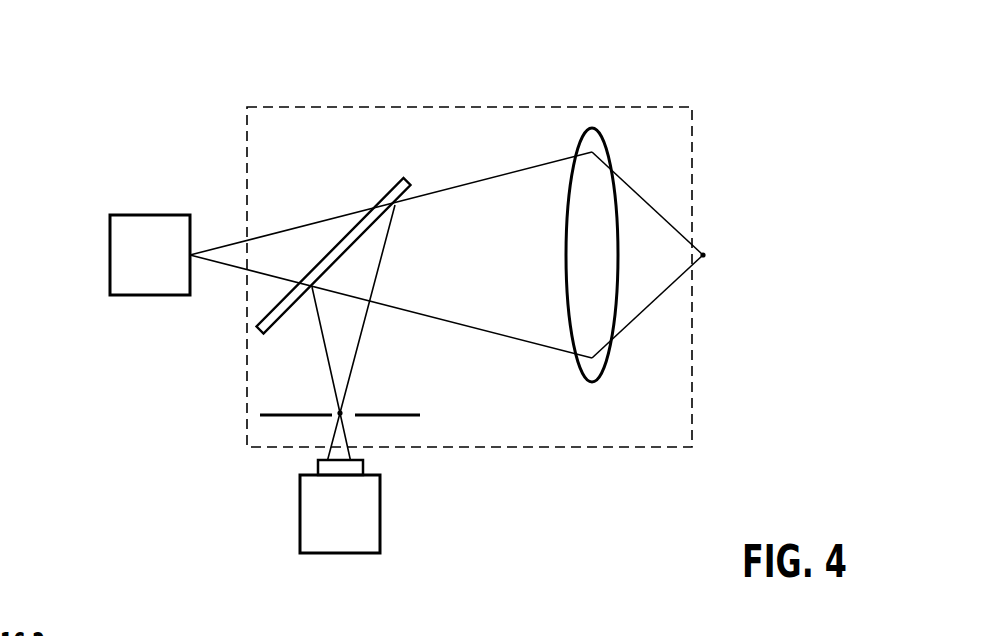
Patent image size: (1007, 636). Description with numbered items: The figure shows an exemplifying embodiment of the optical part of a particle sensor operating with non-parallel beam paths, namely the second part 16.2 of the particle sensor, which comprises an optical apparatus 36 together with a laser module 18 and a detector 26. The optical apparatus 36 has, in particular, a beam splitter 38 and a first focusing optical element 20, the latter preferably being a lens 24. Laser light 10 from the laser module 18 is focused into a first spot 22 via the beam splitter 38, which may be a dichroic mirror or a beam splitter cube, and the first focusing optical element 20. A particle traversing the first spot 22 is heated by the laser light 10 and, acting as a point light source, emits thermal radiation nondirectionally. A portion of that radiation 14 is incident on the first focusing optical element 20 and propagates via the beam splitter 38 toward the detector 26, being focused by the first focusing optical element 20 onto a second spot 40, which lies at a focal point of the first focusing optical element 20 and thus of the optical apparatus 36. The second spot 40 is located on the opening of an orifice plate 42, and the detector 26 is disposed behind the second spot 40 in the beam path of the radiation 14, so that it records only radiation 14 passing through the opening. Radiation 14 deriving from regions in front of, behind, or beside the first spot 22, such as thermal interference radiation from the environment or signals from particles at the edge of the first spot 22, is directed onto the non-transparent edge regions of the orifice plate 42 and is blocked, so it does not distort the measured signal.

The second part of particle sensor 16.2 is at (411, 284).
The optical apparatus 36 is at (612, 102).
The laser module 18 is at (110, 255).
The laser light 10 is at (313, 222).
The beam splitter 38 is at (416, 175).
The first focusing optical element 20 is at (592, 398).
The lens 24 is at (597, 365).
The first spot 22 is at (706, 255).
The radiation 14 is at (360, 338).
The orifice plate 42 is at (396, 410).
The second spot 40 is at (340, 413).
The detector 26 is at (380, 513).